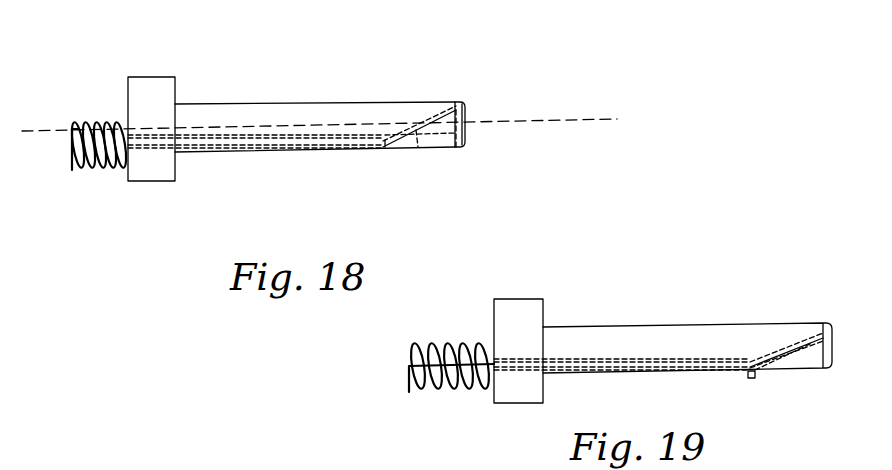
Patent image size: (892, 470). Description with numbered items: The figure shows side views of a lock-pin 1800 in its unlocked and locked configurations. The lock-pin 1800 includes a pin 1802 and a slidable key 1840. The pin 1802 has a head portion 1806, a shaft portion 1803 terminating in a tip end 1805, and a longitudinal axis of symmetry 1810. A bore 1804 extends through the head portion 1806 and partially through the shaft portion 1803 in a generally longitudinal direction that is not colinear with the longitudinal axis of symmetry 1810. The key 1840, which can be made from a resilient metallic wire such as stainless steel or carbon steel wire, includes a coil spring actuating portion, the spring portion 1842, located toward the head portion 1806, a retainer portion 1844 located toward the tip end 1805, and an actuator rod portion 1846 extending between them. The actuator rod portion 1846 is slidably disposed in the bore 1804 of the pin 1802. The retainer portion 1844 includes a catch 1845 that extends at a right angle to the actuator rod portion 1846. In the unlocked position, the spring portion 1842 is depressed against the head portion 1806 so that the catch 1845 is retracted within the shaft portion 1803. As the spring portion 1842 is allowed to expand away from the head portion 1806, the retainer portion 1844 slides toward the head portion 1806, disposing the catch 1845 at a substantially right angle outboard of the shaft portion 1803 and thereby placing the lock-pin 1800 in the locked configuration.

In FIG. 18, the lock-pin 1800 is at (334, 120).
In FIG. 19, the lock-pin 1800 is at (672, 346).
In FIG. 18, the pin 1802 is at (369, 86).
In FIG. 18, the shaft portion 1803 is at (197, 103).
In FIG. 19, the shaft portion 1803 is at (661, 327).
In FIG. 18, the bore 1804 is at (368, 152).
In FIG. 18, the tip end 1805 is at (445, 103).
In FIG. 18, the head portion 1806 is at (165, 77).
In FIG. 19, the head portion 1806 is at (528, 299).
In FIG. 18, the longitudinal axis of symmetry 1810 is at (543, 119).
In FIG. 18, the slidable key 1840 is at (81, 151).
In FIG. 18, the spring portion 1842 is at (103, 117).
In FIG. 19, the spring portion 1842 is at (414, 393).
In FIG. 18, the retainer portion 1844 is at (416, 150).
In FIG. 19, the retainer portion 1844 is at (790, 375).
In FIG. 18, the catch 1845 is at (470, 135).
In FIG. 19, the catch 1845 is at (757, 378).
In FIG. 18, the actuator rod portion 1846 is at (256, 143).